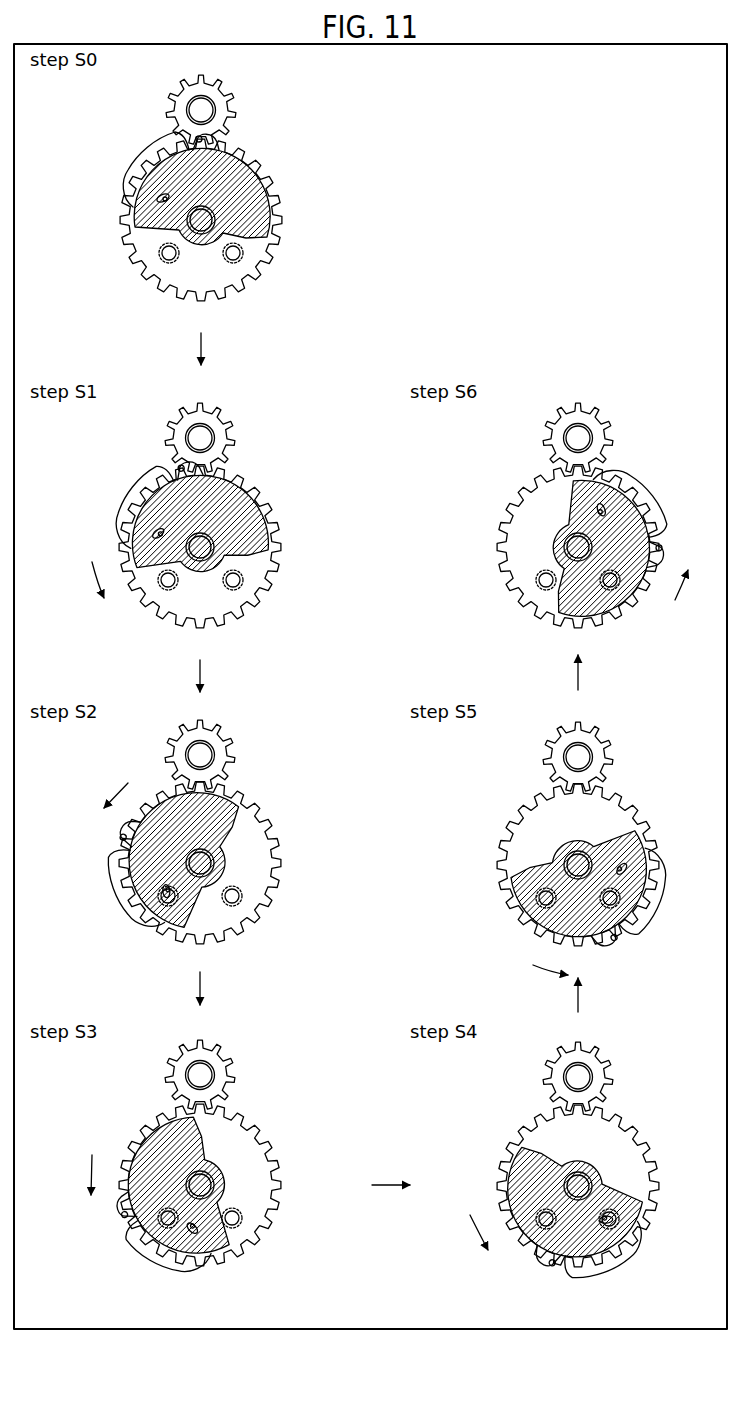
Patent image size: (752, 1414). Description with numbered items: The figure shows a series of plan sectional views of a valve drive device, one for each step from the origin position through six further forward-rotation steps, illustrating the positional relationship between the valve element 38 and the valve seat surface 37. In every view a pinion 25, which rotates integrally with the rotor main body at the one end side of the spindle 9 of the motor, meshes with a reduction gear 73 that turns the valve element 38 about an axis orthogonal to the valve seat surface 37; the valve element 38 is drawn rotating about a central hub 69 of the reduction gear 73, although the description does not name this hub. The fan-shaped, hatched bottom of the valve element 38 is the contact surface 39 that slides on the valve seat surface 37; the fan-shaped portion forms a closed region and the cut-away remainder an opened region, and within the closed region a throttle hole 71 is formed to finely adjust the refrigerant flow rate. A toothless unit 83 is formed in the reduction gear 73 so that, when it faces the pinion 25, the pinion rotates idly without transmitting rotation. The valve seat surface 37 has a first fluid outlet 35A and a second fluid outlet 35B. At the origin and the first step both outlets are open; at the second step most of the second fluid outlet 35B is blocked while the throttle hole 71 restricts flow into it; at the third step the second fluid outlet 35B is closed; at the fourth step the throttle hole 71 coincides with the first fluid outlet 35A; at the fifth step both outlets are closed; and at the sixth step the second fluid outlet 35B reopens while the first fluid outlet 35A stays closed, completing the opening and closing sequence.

The spindle 9 is at (200, 108).
The pinion 25 is at (236, 84).
The valve seat surface 37 is at (403, 703).
The reduction gear 73 is at (284, 216).
The hub of intermediate wheel 69 is at (205, 218).
The contact surface 39 is at (255, 187).
The throttle hole 71 is at (160, 200).
The valve element 38 is at (145, 176).
The toothless unit 83 is at (162, 155).
The first fluid outlet 35A is at (237, 260).
The second fluid outlet 35B is at (166, 258).